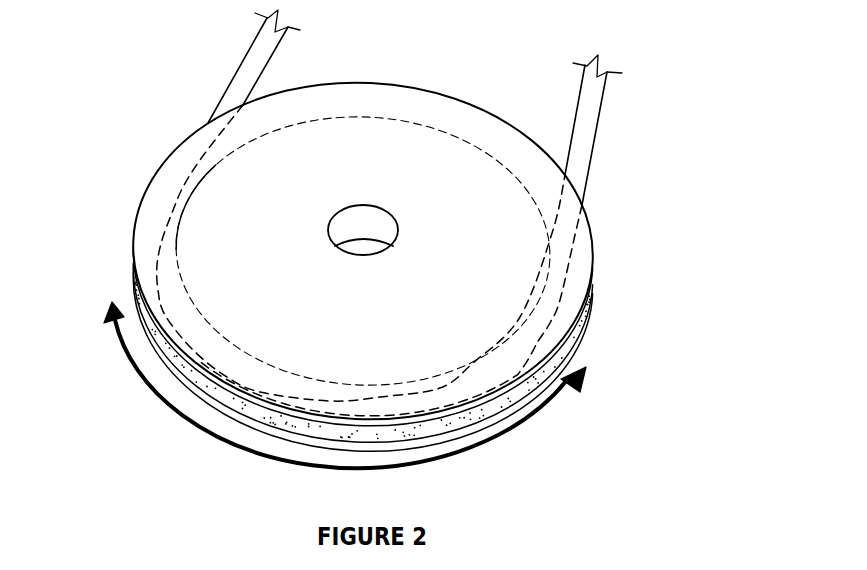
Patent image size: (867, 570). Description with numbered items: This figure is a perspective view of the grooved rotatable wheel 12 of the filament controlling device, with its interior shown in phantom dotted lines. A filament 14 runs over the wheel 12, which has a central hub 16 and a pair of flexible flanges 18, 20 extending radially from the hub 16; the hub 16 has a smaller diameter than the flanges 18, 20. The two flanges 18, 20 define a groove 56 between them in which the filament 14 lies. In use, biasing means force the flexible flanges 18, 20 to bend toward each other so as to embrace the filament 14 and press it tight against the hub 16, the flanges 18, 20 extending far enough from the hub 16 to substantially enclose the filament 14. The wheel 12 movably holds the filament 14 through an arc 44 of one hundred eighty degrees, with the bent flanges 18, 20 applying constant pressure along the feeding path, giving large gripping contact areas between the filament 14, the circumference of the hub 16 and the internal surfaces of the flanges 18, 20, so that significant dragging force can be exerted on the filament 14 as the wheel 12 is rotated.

The rotatable wheel 12 is at (434, 308).
The filament 14 is at (578, 152).
The hub 16 is at (483, 289).
The flexible flange 18 is at (558, 330).
The flexible flange 20 is at (520, 403).
The arc 44 is at (147, 385).
The groove 56 is at (241, 414).